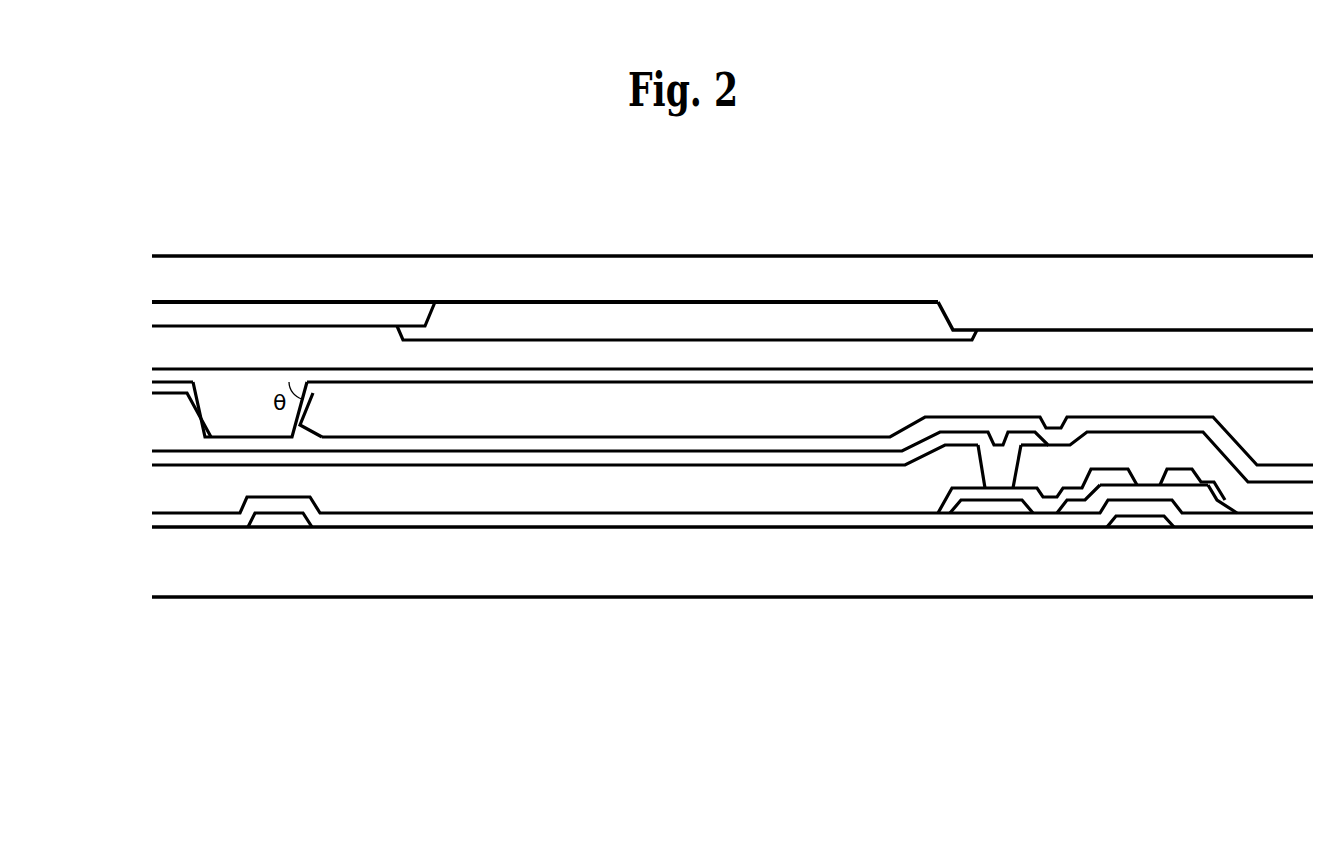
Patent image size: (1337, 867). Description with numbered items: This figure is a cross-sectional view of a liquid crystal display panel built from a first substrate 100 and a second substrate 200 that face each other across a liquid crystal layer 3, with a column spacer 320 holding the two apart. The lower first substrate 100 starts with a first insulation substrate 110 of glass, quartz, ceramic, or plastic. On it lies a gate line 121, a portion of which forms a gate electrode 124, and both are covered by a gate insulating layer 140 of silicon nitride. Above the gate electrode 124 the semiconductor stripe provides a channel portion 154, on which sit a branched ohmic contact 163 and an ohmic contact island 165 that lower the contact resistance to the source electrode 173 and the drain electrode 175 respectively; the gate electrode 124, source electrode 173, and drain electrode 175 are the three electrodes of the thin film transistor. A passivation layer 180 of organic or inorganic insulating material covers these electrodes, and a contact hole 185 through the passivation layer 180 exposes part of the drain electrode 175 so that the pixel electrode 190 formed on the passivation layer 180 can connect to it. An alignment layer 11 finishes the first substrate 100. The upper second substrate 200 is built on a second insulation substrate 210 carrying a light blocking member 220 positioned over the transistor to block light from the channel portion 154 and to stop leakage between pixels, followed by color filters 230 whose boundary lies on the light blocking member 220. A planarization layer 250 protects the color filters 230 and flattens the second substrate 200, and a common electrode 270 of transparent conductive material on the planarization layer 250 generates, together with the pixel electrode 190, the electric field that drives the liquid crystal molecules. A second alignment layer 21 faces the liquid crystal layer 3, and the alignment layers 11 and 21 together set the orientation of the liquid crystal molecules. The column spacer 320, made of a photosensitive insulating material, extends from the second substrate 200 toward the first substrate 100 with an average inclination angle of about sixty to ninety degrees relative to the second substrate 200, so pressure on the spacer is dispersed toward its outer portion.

The first substrate 100 is at (126, 545).
The second substrate 200 is at (126, 344).
The liquid crystal layer 3 is at (126, 427).
The first insulation substrate 110 is at (573, 585).
The gate line 121 is at (283, 518).
The gate electrode 124 is at (1138, 520).
The gate insulating layer 140 is at (788, 522).
The channel portion 154 is at (1092, 505).
The ohmic contact 163 is at (1200, 487).
The ohmic contact island 165 is at (1072, 500).
The source electrode 173 is at (1202, 581).
The drain electrode 175 is at (1002, 490).
The passivation layer 180 is at (442, 500).
The contact hole 185 is at (983, 482).
The pixel electrode 190 is at (637, 457).
The alignment layer 11 is at (718, 443).
The second insulation substrate 210 is at (853, 260).
The light blocking member 220 is at (296, 264).
The color filter 230 is at (707, 310).
The planarization layer 250 is at (777, 353).
The common electrode 270 is at (610, 373).
The alignment layer 21 is at (532, 387).
The column spacer 320 is at (230, 397).